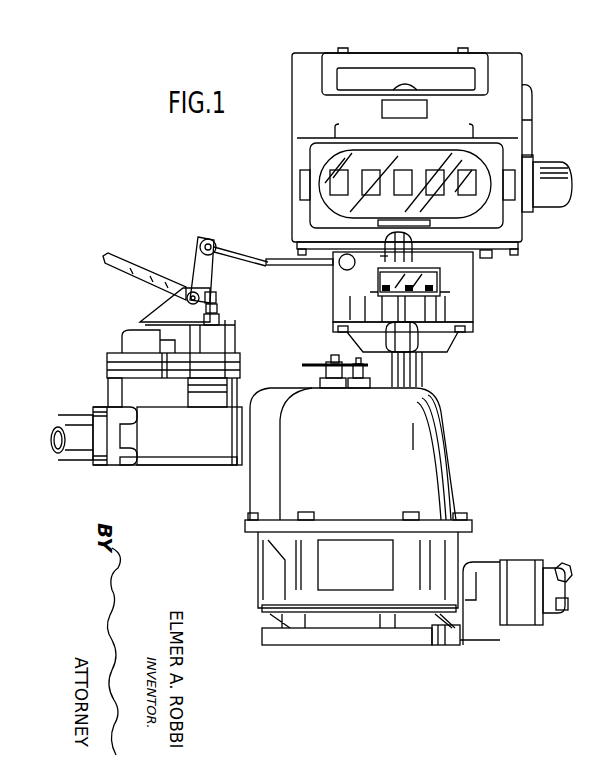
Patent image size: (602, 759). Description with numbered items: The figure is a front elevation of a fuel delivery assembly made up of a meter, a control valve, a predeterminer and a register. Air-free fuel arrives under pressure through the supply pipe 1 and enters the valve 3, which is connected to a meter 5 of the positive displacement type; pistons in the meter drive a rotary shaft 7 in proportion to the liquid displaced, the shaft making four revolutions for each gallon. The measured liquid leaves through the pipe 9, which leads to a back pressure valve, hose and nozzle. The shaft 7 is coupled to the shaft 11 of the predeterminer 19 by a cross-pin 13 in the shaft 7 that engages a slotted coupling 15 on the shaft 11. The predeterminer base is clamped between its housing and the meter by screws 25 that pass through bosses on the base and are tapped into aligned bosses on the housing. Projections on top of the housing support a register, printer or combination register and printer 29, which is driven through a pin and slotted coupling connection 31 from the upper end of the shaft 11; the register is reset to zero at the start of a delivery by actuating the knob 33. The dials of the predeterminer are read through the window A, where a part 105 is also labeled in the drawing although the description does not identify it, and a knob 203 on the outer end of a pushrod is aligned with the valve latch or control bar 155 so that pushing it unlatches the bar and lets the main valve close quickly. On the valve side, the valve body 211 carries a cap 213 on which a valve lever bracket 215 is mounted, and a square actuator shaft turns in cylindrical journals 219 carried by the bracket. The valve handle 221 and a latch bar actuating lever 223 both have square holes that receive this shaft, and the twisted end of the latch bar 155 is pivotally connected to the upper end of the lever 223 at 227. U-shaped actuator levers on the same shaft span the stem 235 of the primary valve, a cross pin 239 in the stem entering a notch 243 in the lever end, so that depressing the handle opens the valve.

The supply pipe 1 is at (78, 460).
The valve 3 is at (160, 466).
The meter 5 is at (442, 408).
The rotary shaft 7 is at (412, 338).
The pipe 9 is at (546, 572).
The shaft 11 is at (414, 309).
The cross-pin 13 is at (392, 340).
The slotted coupling 15 is at (388, 326).
The predeterminer 19 is at (473, 299).
The screws 25 is at (489, 259).
The register 29 is at (292, 177).
The pin and slotted coupling connection 31 is at (380, 258).
The knob 33 is at (556, 199).
The counter wheel 105 is at (438, 298).
The valve latch or control bar 155 is at (262, 268).
The knob 203 is at (345, 270).
The valve body 211 is at (120, 387).
The cap 213 is at (124, 337).
The valve lever bracket 215 is at (152, 308).
The cylindrical journals 219 is at (200, 295).
The valve handle 221 is at (105, 258).
The latch bar actuating lever 223 is at (211, 263).
The pivotal connection 227 is at (206, 240).
The stem 235 is at (217, 318).
The cross pin 239 is at (217, 309).
The notch 243 is at (217, 297).
The window A is at (440, 283).